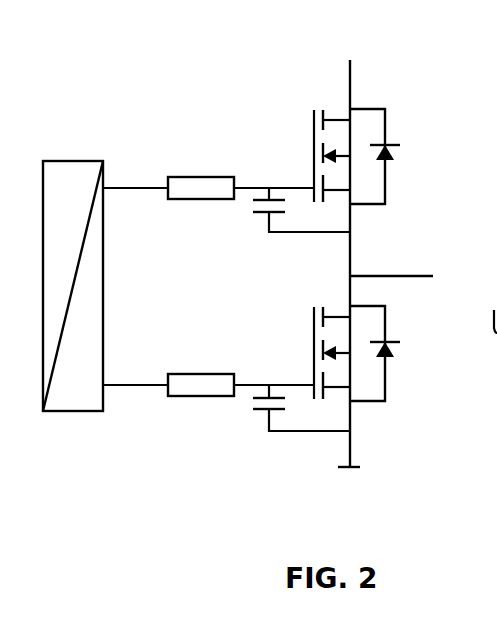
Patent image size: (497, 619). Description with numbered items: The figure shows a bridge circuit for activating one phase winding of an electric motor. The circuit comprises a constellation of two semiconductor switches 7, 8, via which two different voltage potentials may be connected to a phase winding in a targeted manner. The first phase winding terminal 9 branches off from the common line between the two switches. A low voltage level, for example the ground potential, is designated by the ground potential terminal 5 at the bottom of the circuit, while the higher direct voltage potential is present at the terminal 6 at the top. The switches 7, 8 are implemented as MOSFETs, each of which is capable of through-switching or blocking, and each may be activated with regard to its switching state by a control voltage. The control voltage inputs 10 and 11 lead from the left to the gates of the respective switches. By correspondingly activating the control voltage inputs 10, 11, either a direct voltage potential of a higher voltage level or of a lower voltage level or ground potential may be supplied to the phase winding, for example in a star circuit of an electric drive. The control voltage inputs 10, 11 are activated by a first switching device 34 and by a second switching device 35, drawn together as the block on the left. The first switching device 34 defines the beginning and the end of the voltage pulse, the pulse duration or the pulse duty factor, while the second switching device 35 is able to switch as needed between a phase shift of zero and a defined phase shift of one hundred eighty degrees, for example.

The ground potential terminal 5 is at (355, 469).
The terminal 6 is at (350, 73).
The semiconductor switch 7 is at (385, 125).
The semiconductor switch 8 is at (385, 375).
The first phase winding terminal 9 is at (397, 275).
The control voltage input 10 is at (138, 190).
The control voltage input 11 is at (138, 387).
The first switching device 34 is at (72, 161).
The second switching device 35 is at (73, 411).